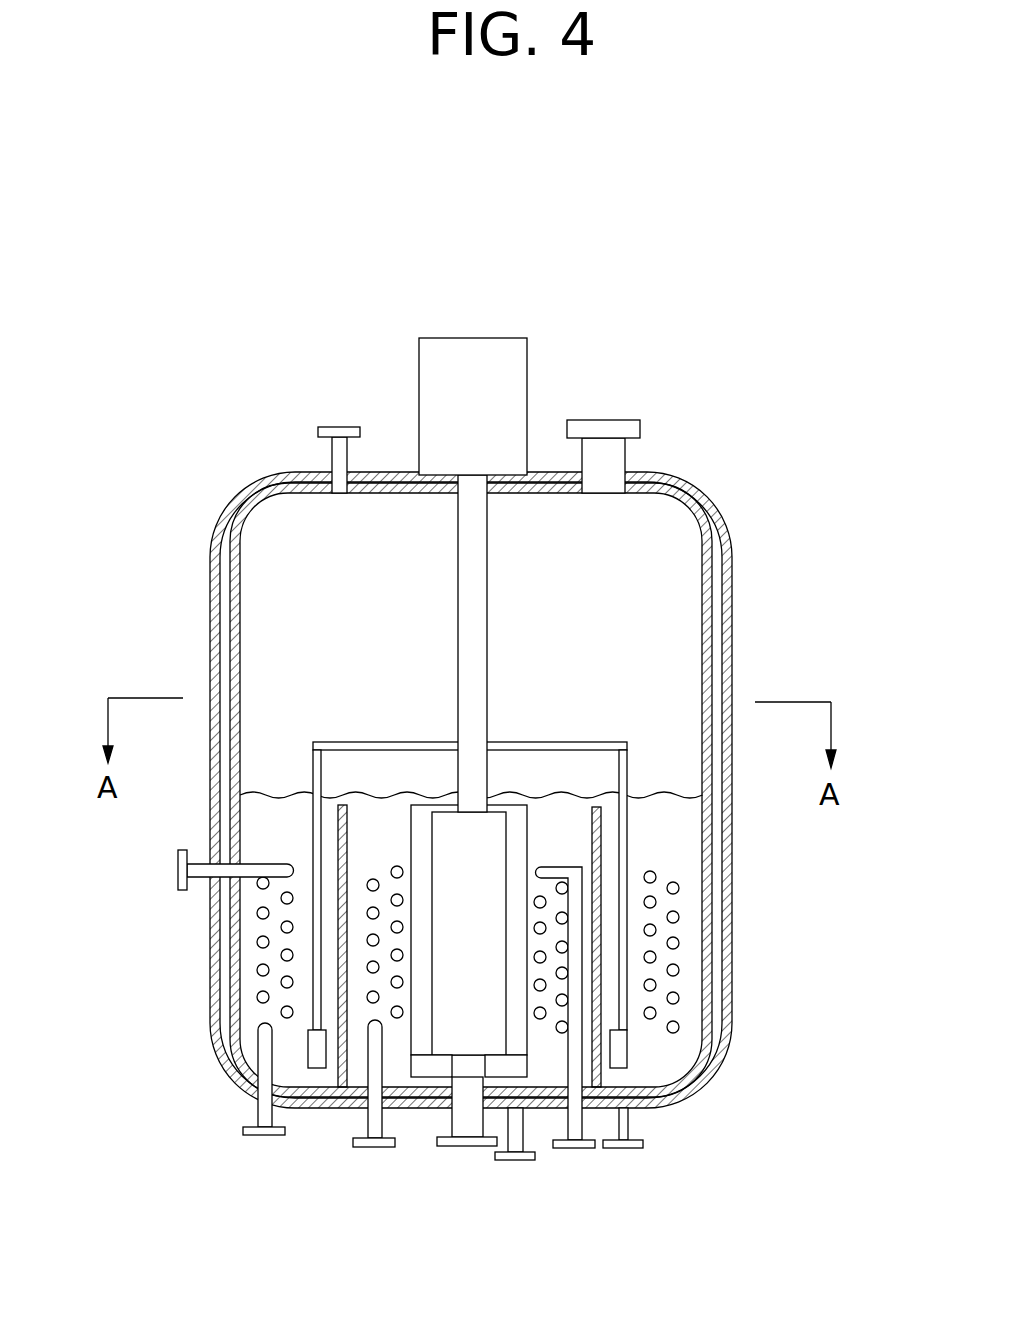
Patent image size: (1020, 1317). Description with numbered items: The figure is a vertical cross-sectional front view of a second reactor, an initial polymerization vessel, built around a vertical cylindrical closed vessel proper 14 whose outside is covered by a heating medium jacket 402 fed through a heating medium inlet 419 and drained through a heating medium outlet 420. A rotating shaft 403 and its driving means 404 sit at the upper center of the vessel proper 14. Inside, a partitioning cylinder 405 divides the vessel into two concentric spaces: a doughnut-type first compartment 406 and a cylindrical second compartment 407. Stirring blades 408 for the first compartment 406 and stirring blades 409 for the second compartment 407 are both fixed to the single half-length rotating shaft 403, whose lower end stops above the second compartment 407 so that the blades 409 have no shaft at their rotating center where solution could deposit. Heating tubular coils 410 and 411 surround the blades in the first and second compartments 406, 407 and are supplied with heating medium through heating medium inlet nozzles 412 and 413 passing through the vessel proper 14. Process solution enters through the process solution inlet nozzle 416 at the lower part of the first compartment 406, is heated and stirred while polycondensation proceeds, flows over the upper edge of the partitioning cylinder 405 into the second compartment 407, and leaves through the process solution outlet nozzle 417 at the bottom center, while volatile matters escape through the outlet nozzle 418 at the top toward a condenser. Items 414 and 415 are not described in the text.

The vessel proper 14 is at (520, 767).
The heating medium jacket 402 is at (717, 588).
The rotating shaft 403 is at (487, 589).
The driving means 404 is at (507, 339).
The partitioning cylinder 405 is at (588, 836).
The first compartment 406 is at (688, 807).
The second compartment 407 is at (565, 898).
The stirring blades 408 is at (627, 1052).
The stirring blades 409 is at (421, 890).
The heating tubular coil 410 is at (652, 875).
The heating tubular coil 411 is at (372, 880).
The heating medium inlet nozzle 412 is at (263, 1137).
The heating medium inlet nozzle 413 is at (372, 1148).
The overflow pipe 414 is at (177, 872).
The gas inlet pipe 415 is at (583, 1148).
The process solution inlet nozzle 416 is at (627, 1148).
The process solution outlet nozzle 417 is at (460, 1147).
The outlet nozzle for volatile matters 418 is at (612, 420).
The heating medium inlet 419 is at (497, 1160).
The heating medium outlet 420 is at (335, 427).